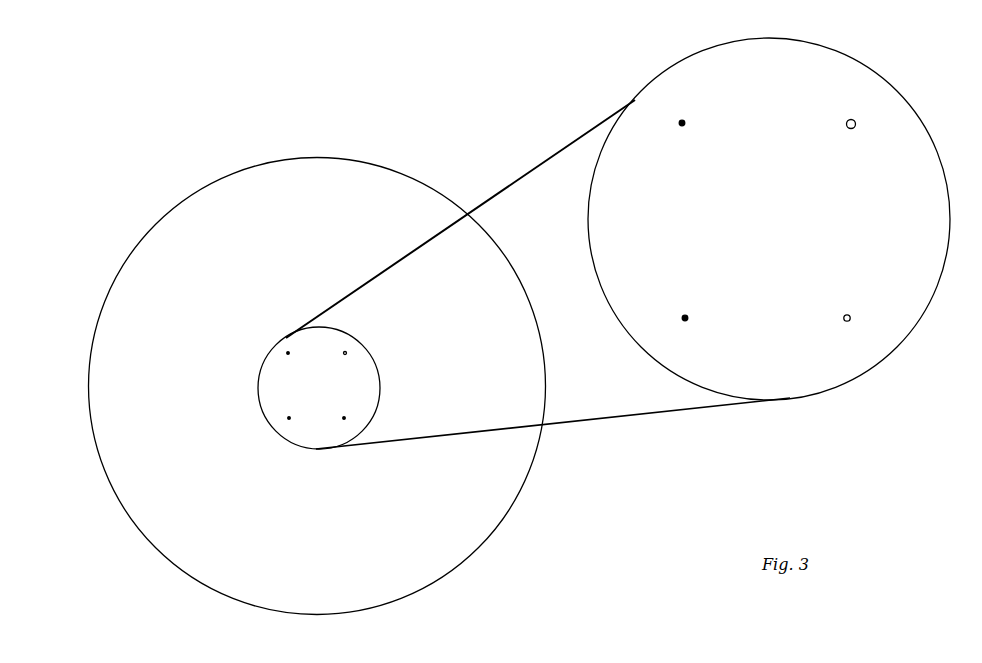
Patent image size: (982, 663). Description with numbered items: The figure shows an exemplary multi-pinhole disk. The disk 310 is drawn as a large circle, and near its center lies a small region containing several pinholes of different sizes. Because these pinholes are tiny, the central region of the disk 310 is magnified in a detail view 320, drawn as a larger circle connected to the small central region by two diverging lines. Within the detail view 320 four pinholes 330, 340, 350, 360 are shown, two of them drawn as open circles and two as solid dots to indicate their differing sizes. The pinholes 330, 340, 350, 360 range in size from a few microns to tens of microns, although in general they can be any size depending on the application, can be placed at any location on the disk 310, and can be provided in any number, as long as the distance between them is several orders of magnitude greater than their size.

The disk 310 is at (317, 375).
The detail view 320 is at (604, 243).
The pinhole 330 is at (867, 110).
The pinhole 340 is at (861, 301).
The pinhole 350 is at (698, 301).
The pinhole 360 is at (697, 108).